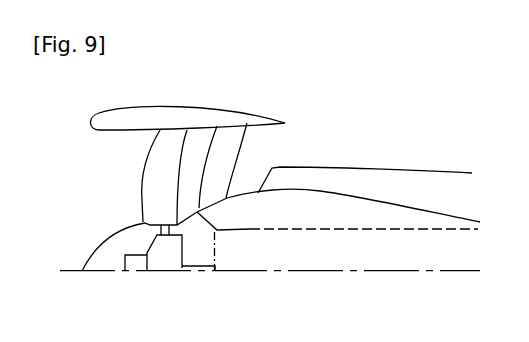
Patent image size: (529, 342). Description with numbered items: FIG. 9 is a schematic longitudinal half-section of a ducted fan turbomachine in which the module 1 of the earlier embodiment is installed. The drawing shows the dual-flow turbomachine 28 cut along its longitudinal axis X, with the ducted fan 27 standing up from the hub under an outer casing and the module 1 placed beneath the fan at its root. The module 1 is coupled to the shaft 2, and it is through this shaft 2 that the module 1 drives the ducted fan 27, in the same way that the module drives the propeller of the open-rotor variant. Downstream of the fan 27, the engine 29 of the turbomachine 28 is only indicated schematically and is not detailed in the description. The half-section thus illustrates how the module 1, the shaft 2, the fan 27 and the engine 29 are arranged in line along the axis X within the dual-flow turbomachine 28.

The module 1 is at (170, 250).
The shaft 2 is at (198, 267).
The ducted fan 27 is at (153, 182).
The dual-flow turbomachine 28 is at (127, 100).
The engine 29 is at (345, 250).
The longitudinal axis X is at (468, 272).